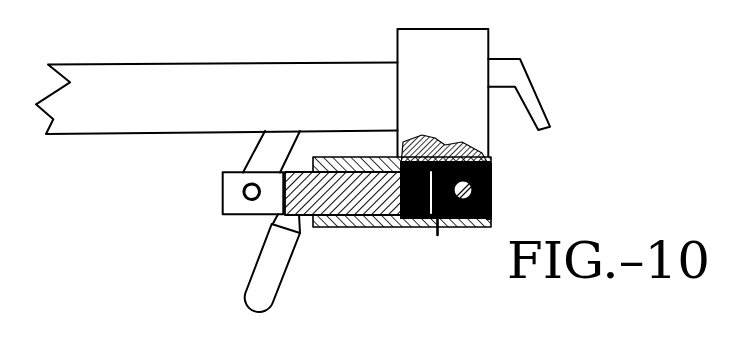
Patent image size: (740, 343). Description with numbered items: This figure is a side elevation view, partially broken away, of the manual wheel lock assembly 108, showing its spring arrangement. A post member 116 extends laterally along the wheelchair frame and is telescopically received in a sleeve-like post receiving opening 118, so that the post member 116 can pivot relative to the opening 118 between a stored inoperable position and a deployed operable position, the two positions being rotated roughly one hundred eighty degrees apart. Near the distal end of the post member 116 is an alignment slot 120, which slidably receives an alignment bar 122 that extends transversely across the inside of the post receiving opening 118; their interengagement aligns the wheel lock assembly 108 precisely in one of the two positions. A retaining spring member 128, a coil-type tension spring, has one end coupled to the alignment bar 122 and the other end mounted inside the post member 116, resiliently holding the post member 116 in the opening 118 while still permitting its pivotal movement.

The wheel lock assembly 108 is at (124, 192).
The post member 116 is at (357, 228).
The post receiving opening 118 is at (408, 228).
The alignment slot 120 is at (490, 173).
The alignment bar 122 is at (490, 188).
The retaining spring member 128 is at (438, 235).